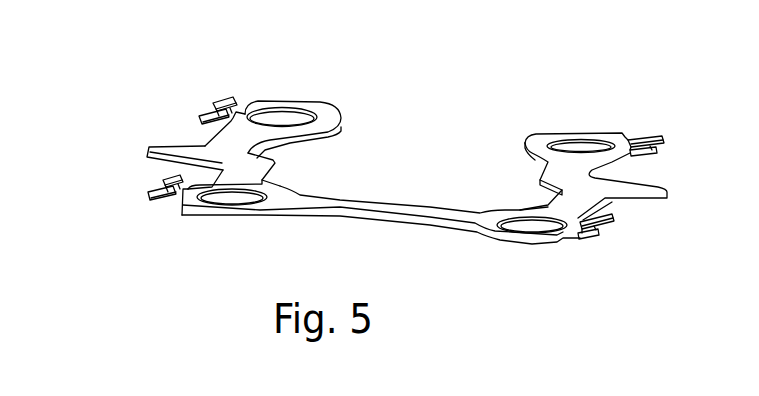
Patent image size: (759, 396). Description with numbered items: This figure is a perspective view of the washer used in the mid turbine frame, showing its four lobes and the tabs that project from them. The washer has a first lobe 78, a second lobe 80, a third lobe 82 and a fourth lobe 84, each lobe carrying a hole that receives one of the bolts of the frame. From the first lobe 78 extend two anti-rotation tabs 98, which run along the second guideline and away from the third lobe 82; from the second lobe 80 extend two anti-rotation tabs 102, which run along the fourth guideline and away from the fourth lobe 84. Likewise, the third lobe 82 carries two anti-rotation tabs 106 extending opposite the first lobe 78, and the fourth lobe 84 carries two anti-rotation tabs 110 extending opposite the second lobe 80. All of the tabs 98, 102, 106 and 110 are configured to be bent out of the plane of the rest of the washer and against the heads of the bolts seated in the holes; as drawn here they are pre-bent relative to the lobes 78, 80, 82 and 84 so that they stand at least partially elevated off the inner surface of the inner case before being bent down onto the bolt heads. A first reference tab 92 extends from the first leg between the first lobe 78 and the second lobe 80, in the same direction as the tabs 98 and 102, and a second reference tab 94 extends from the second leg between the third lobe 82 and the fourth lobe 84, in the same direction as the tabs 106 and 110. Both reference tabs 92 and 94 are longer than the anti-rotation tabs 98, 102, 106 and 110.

The first lobe 78 is at (200, 205).
The second lobe 80 is at (330, 115).
The third lobe 82 is at (525, 235).
The fourth lobe 84 is at (627, 137).
The first reference tab 92 is at (175, 150).
The second reference tab 94 is at (645, 190).
The anti-rotation tabs 98 is at (157, 197).
The anti-rotation tabs 102 is at (233, 111).
The anti-rotation tabs 106 is at (593, 237).
The anti-rotation tabs 110 is at (660, 155).